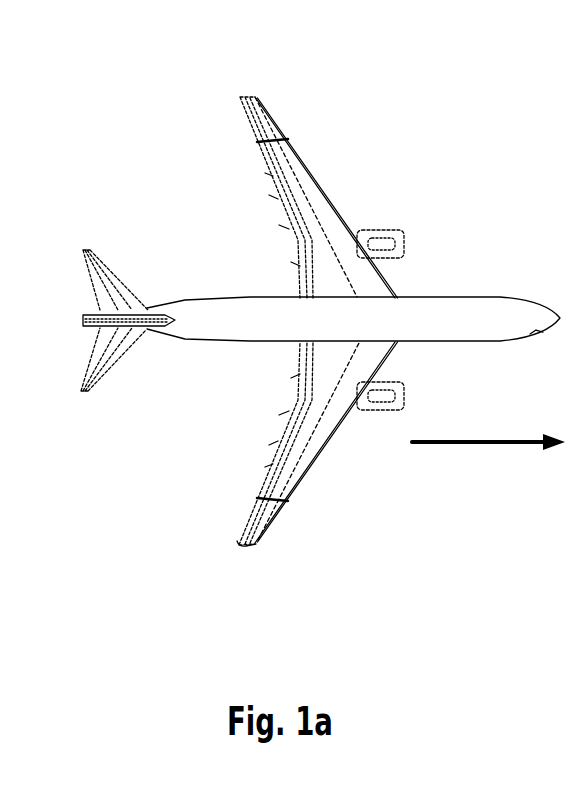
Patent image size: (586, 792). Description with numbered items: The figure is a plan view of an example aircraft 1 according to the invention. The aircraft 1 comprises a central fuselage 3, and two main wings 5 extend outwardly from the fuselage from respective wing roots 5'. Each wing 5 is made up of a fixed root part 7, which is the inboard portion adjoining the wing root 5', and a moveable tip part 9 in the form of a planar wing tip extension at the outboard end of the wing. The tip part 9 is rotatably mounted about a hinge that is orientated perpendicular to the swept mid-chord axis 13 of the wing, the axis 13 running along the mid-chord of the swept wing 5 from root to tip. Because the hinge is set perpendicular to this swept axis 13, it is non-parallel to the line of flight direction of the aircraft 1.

The aircraft 1 is at (428, 187).
The central fuselage 3 is at (251, 317).
The main wing 5 is at (224, 368).
The wing root 5' is at (401, 320).
The fixed root part 7 is at (353, 427).
The moveable tip part 9 is at (257, 528).
The swept mid-chord axis 13 is at (325, 235).